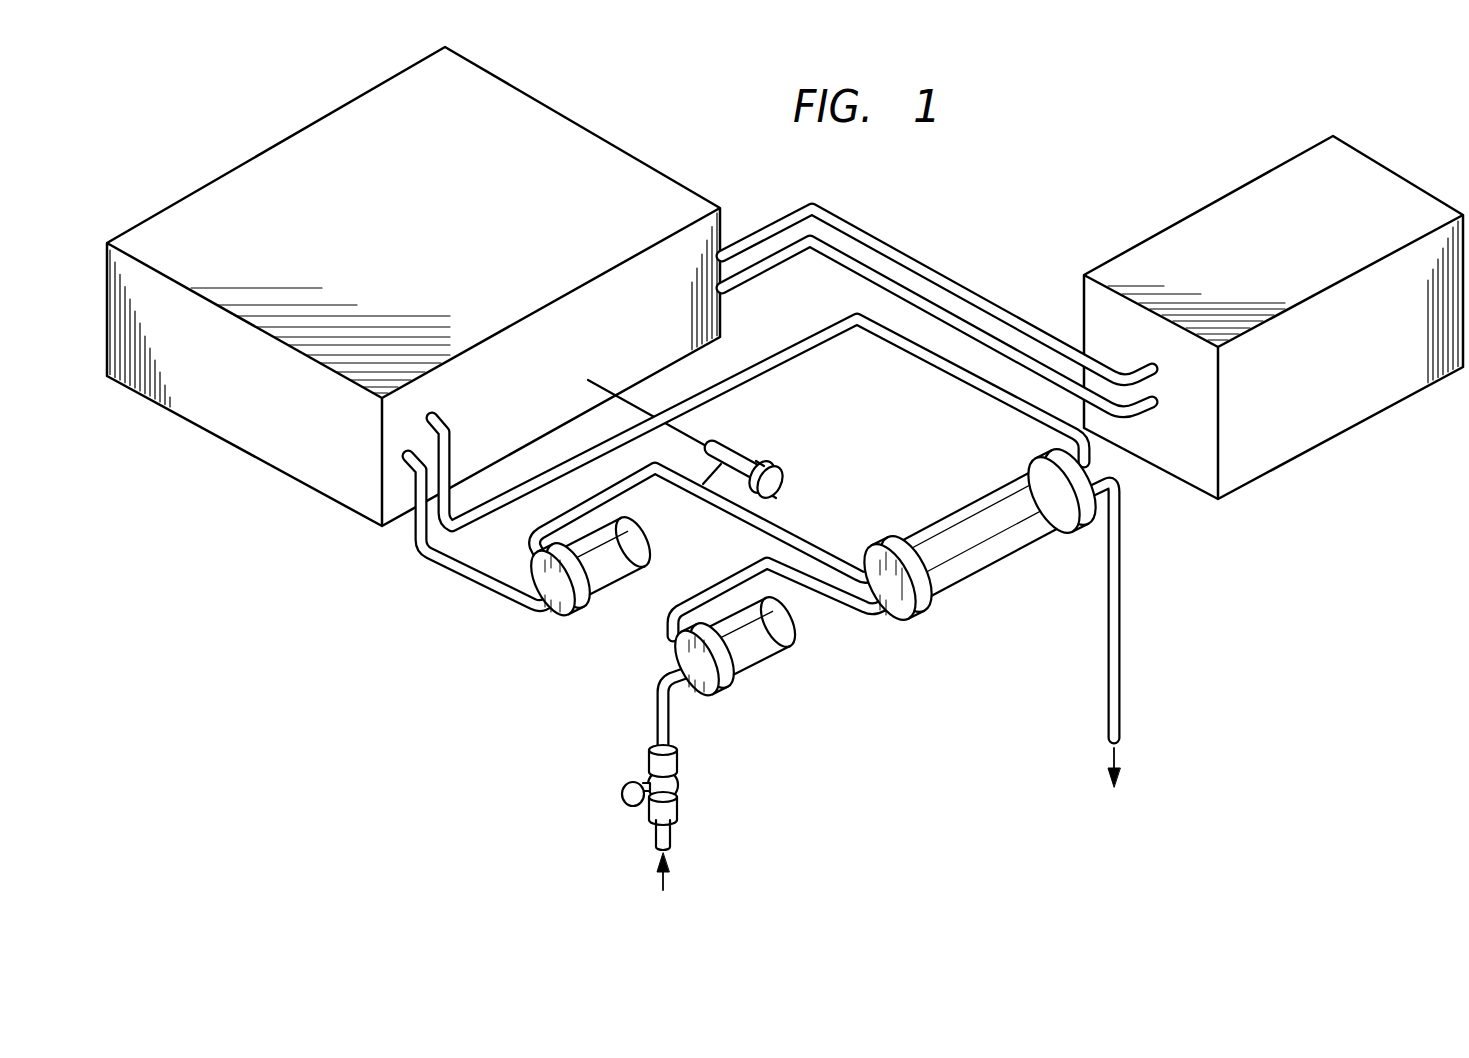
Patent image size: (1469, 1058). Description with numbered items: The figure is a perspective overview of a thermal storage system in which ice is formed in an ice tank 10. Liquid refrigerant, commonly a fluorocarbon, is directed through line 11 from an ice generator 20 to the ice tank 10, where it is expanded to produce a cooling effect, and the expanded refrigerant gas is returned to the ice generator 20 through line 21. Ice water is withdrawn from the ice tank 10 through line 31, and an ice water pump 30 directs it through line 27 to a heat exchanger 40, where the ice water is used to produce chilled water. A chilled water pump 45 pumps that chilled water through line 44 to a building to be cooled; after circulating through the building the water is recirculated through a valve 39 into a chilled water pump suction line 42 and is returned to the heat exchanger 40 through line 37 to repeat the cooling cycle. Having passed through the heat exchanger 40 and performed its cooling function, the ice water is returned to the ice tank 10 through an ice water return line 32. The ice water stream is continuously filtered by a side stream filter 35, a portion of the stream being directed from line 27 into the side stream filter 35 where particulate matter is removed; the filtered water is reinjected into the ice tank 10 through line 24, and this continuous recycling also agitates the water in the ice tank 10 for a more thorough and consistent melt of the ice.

The ice tank 10 is at (298, 149).
The ice generator 20 is at (1229, 207).
The line 11 is at (873, 238).
The line 21 is at (756, 275).
The line 24 is at (603, 382).
The line 27 is at (803, 538).
The ice water pump 30 is at (625, 560).
The line 31 is at (455, 573).
The ice water return line 32 is at (953, 374).
The side stream filter 35 is at (745, 447).
The line 37 is at (853, 612).
The valve 39 is at (678, 787).
The heat exchanger 40 is at (993, 550).
The chilled water pump suction line 42 is at (668, 677).
The line 44 is at (1122, 620).
The chilled water pump 45 is at (770, 643).